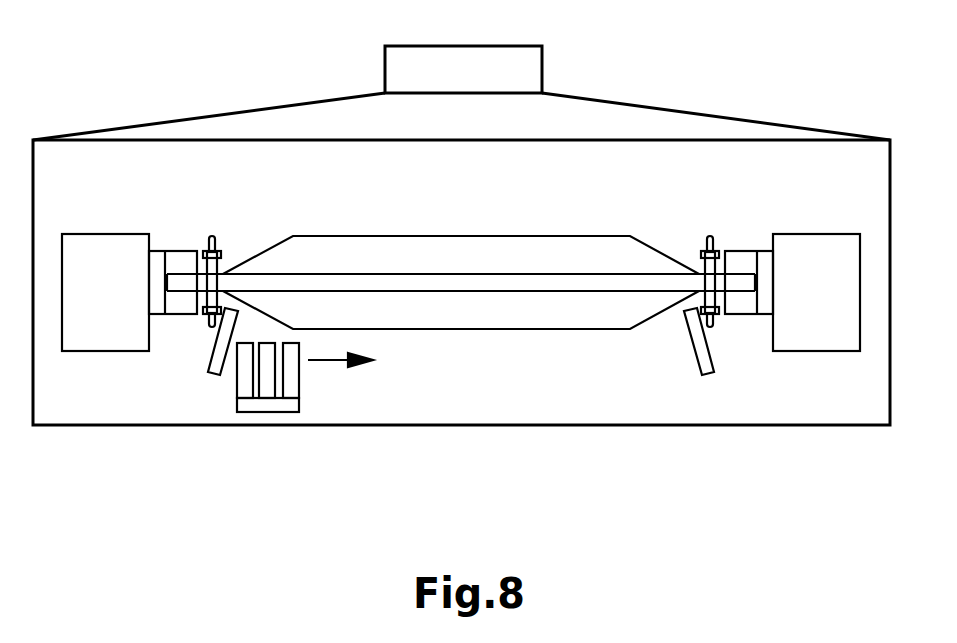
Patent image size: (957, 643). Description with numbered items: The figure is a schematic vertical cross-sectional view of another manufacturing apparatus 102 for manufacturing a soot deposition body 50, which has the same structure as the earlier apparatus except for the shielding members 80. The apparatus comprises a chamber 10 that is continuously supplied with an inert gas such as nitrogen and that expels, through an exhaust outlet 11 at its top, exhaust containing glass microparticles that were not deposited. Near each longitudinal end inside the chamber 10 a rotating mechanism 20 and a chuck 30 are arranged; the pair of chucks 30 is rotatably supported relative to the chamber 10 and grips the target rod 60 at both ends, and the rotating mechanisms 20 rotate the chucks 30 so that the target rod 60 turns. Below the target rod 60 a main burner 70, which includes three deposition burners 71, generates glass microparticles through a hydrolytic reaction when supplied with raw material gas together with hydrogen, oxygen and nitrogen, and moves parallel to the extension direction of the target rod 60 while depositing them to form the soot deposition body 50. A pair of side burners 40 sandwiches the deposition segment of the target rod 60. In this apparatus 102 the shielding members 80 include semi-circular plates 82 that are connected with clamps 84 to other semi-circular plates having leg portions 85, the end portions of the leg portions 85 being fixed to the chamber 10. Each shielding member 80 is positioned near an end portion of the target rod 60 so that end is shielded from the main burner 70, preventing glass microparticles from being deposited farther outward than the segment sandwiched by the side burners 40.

The manufacturing apparatus 102 is at (86, 98).
The chamber 10 is at (505, 425).
The exhaust outlet 11 is at (542, 68).
The rotating mechanism 20 is at (105, 234).
The chuck 30 is at (182, 251).
The side burner 40 is at (208, 371).
The soot deposition body 50 is at (492, 237).
The target rod 60 is at (435, 275).
The main burner 70 is at (310, 419).
The deposition burner 71 is at (299, 377).
The shielding member 80 is at (462, 247).
The semi-circular plate 82 is at (226, 258).
The clamp 84 is at (207, 252).
The leg portion 85 is at (212, 236).